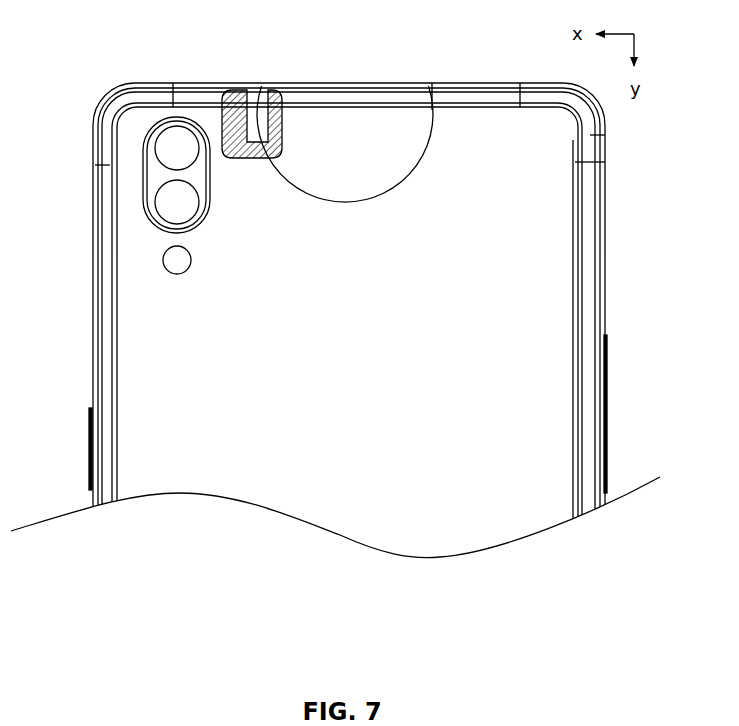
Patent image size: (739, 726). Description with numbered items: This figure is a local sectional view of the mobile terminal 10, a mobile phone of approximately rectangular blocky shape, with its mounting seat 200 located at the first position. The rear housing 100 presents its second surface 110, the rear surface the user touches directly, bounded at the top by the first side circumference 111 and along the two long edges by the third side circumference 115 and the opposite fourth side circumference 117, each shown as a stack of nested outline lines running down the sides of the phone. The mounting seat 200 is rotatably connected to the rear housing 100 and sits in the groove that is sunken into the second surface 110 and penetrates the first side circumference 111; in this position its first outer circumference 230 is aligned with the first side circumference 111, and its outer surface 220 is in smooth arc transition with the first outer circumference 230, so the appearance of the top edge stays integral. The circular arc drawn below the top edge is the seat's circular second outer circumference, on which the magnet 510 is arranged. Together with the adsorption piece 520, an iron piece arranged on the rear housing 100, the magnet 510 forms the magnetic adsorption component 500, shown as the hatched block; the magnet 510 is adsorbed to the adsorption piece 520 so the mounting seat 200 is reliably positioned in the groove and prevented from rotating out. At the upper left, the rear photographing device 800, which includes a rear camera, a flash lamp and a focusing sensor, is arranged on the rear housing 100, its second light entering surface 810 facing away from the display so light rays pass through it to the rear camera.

The mobile terminal 10 is at (92, 60).
The rear housing 100 is at (132, 296).
The second surface 110 is at (132, 392).
The first side circumference 111 is at (478, 84).
The third side circumference 115 is at (600, 313).
The fourth side circumference 117 is at (95, 370).
The mounting seat 200 is at (392, 100).
The outer surface 220 is at (318, 125).
The first outer circumference 230 is at (340, 86).
The magnetic adsorption component 500 is at (245, 126).
The magnet 510 is at (262, 92).
The adsorption piece 520 is at (238, 92).
The rear photographing device 800 is at (170, 152).
The second light entering surface 810 is at (167, 158).